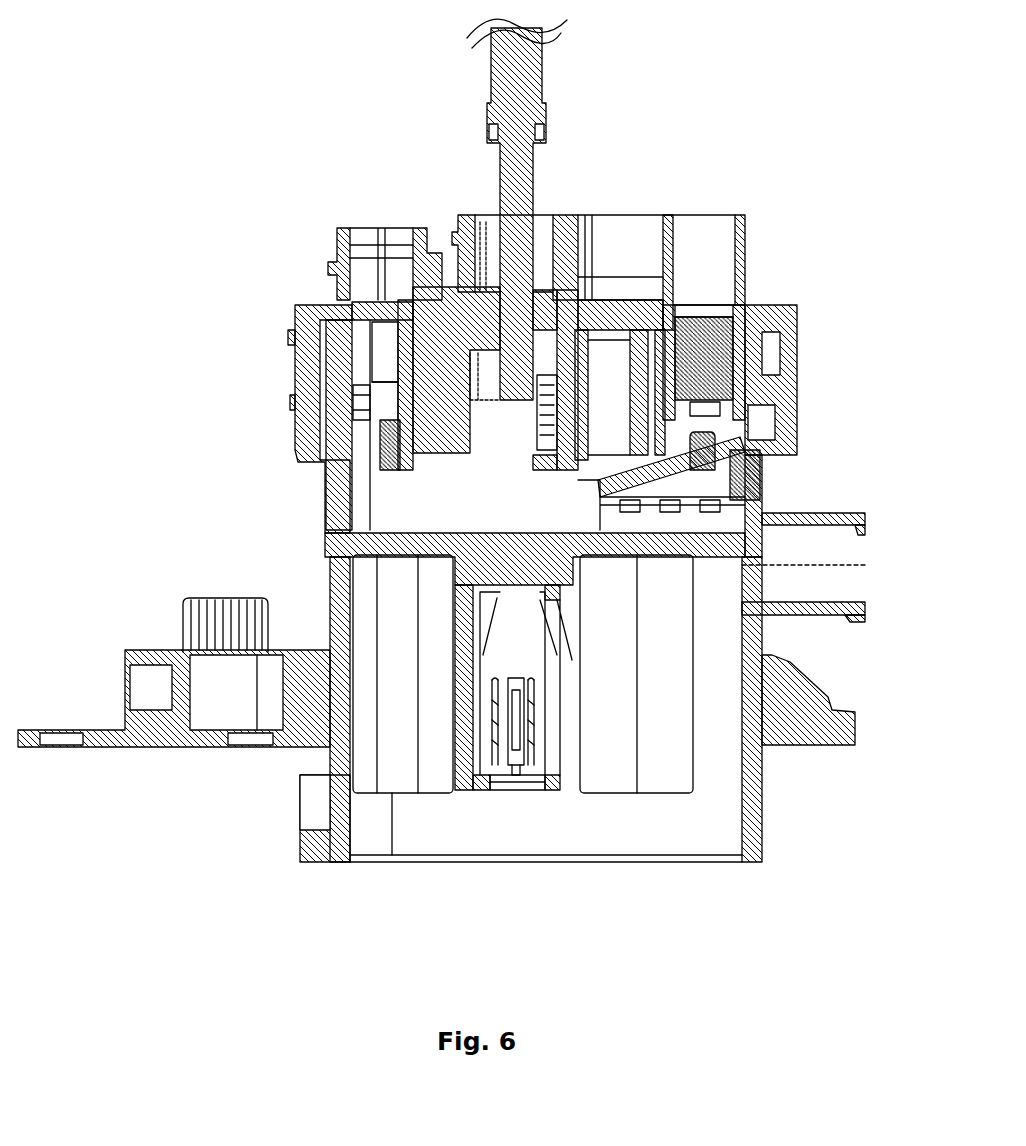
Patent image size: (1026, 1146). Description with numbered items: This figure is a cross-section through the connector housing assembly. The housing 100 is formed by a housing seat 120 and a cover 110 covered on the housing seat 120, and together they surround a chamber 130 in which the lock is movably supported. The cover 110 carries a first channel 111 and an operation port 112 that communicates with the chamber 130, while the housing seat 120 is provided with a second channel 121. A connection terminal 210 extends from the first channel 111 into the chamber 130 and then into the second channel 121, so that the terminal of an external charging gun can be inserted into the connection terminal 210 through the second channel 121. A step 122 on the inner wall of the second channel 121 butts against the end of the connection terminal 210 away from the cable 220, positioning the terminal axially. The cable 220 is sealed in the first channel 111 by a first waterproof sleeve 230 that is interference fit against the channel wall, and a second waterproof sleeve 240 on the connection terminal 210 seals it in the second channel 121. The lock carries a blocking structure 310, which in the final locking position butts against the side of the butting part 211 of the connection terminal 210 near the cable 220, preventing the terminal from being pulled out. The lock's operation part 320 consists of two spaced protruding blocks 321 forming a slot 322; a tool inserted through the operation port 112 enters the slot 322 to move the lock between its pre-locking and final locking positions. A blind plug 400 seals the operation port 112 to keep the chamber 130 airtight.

The housing 100 is at (160, 290).
The cover 110 is at (297, 315).
The first channel 111 is at (548, 232).
The operation port 112 is at (698, 228).
The housing seat 120 is at (330, 363).
The second channel 121 is at (513, 788).
The step 122 is at (483, 782).
The chamber 130 is at (355, 405).
The connection terminal 210 is at (503, 605).
The butting part 211 is at (500, 487).
The cable 220 is at (497, 67).
The first waterproof sleeve 230 is at (470, 300).
The second waterproof sleeve 240 is at (505, 540).
The blocking structure 310 is at (435, 472).
The operation part 320 is at (876, 357).
The protruding block 321 is at (700, 430).
The slot 322 is at (722, 447).
The blind plug 400 is at (678, 357).